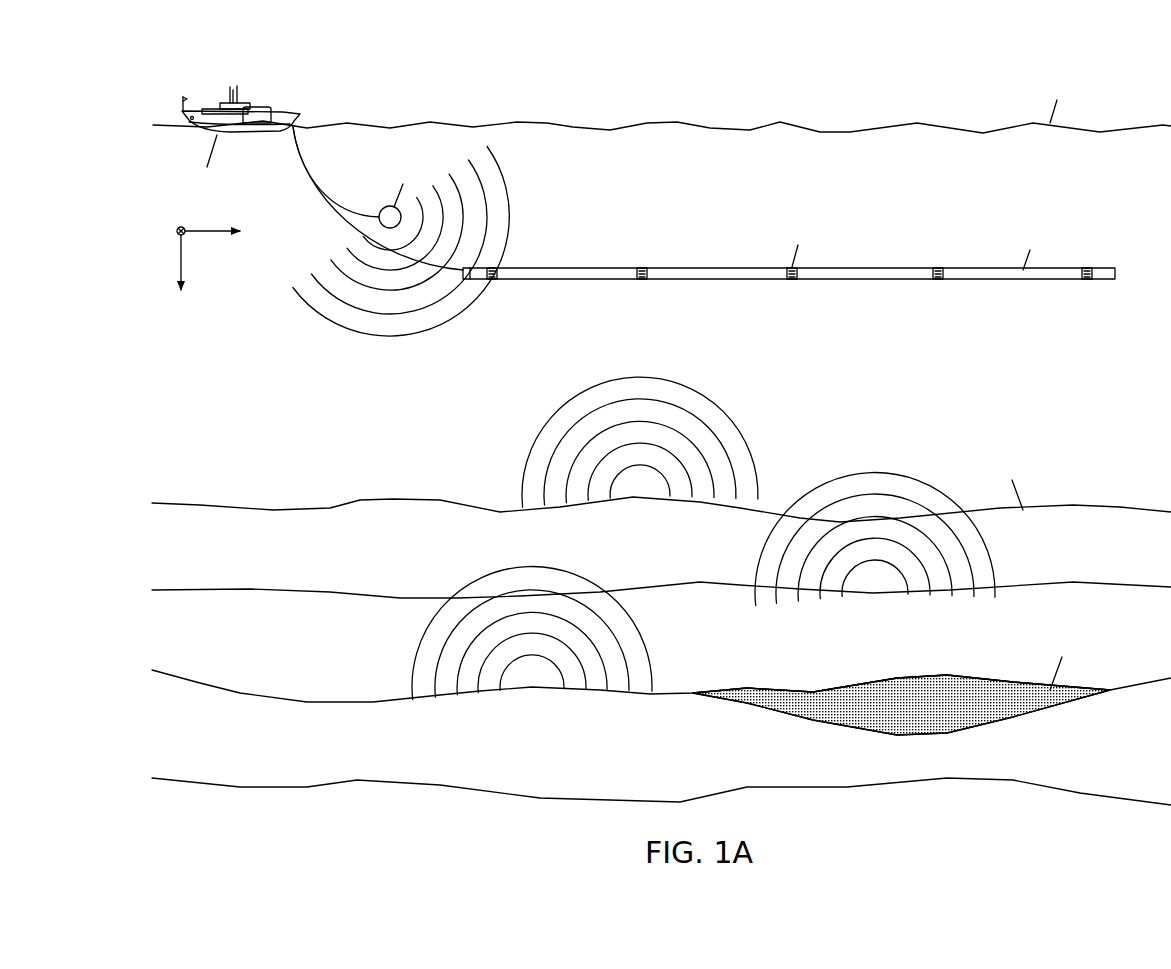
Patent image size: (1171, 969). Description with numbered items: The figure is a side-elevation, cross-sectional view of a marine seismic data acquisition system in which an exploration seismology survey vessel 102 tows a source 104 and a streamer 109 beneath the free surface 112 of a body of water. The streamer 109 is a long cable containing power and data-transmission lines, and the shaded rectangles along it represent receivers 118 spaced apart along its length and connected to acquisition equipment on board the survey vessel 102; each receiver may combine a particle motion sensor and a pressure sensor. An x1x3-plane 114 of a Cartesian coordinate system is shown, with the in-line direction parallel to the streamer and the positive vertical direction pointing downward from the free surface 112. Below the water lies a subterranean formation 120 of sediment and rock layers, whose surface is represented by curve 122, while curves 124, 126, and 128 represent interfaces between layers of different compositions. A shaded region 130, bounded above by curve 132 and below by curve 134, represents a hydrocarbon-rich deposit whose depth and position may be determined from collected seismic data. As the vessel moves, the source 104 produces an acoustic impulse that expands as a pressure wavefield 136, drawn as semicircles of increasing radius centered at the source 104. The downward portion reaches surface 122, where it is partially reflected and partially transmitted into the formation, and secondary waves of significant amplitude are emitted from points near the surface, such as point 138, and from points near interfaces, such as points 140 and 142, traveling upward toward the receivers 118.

The survey vessel 102 is at (259, 103).
The source 104 is at (388, 206).
The streamer 109 is at (865, 268).
The free surface 112 is at (830, 127).
The x1x3-plane 114 is at (212, 260).
The receivers 118 is at (790, 281).
The subterranean formation 120 is at (298, 450).
The surface of the subterranean formation 122 is at (360, 500).
The interface 124 is at (360, 595).
The interface 126 is at (348, 700).
The interface 128 is at (348, 780).
The hydrocarbon-rich subterranean deposit 130 is at (957, 690).
The curve bounding the top of the deposit 132 is at (910, 678).
The curve bounding the bottom of the deposit 134 is at (798, 717).
The pressure wavefield 136 is at (537, 214).
The point on the surface 138 is at (642, 498).
The point on an interface 140 is at (535, 690).
The point on an interface 142 is at (875, 595).